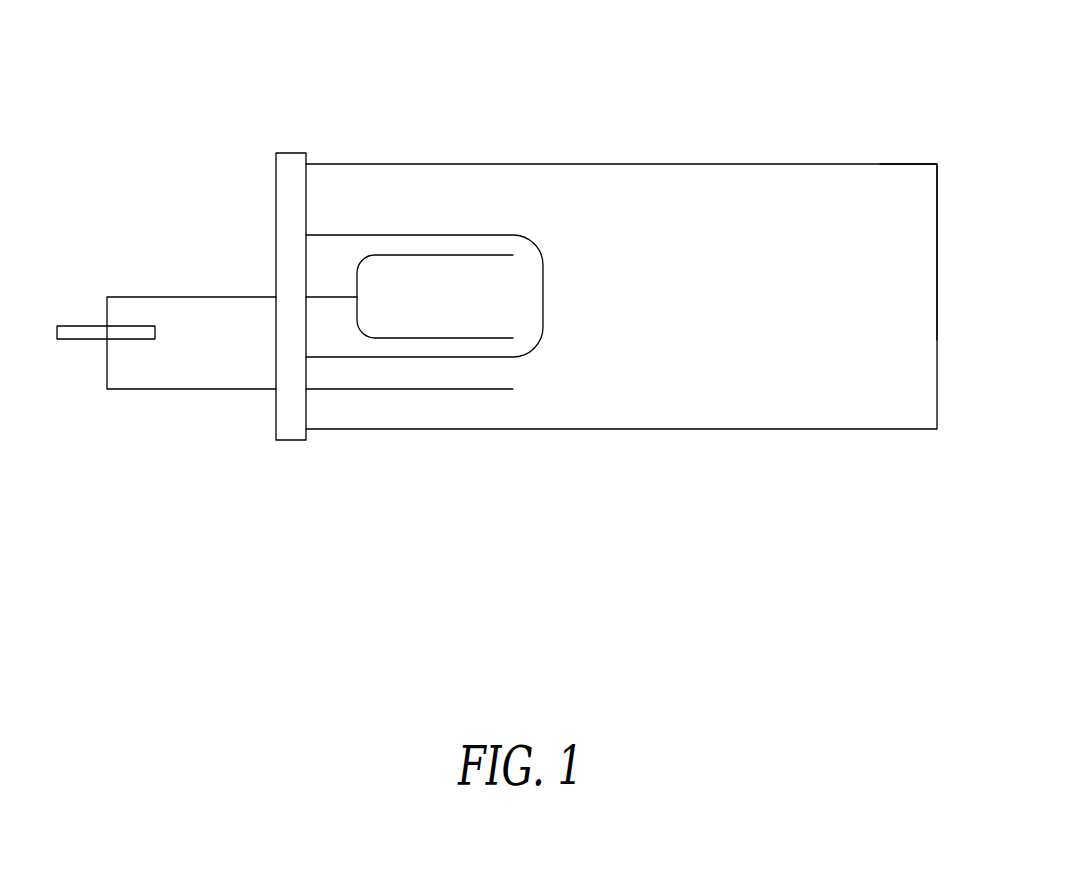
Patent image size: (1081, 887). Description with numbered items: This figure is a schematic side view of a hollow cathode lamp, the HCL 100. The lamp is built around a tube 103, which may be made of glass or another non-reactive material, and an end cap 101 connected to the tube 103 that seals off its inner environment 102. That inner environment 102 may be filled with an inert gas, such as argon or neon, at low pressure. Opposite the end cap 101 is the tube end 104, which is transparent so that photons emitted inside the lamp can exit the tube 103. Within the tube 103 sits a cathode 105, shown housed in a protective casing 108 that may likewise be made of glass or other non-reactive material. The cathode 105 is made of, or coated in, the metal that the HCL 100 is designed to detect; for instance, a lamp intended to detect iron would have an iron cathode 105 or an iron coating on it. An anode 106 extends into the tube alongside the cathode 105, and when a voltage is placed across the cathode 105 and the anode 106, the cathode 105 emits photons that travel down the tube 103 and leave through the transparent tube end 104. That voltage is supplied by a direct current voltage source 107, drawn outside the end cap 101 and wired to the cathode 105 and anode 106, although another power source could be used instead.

The HCL 100 is at (753, 100).
The end cap 101 is at (290, 440).
The inner environment 102 is at (903, 348).
The tube 103 is at (912, 164).
The tube end 104 is at (937, 273).
The cathode 105 is at (452, 255).
The anode 106 is at (403, 390).
The direct current voltage source 107 is at (82, 325).
The protective casing 108 is at (361, 235).